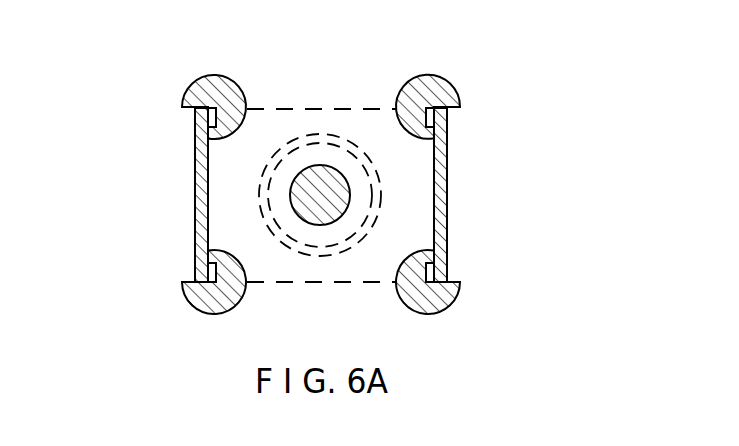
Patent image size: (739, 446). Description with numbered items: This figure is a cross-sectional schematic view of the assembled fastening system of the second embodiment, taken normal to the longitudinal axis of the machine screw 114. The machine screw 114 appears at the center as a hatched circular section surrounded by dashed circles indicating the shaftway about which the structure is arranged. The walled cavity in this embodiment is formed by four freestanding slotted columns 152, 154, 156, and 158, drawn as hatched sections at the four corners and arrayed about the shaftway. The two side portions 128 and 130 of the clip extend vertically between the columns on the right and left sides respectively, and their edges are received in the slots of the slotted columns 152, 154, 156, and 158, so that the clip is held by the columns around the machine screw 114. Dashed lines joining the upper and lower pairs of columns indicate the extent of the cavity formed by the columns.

The machine screw 114 is at (321, 177).
The side portion of the clip 128 is at (448, 205).
The side portion of the clip 130 is at (194, 202).
The slotted column 152 is at (455, 82).
The slotted column 154 is at (186, 92).
The slotted column 156 is at (186, 304).
The slotted column 158 is at (446, 311).